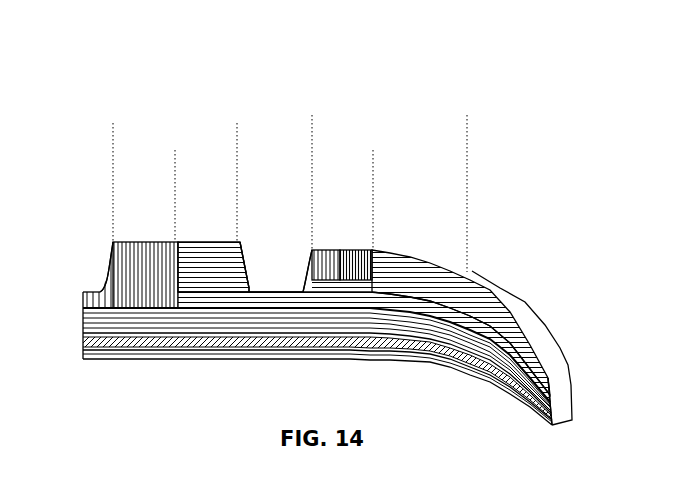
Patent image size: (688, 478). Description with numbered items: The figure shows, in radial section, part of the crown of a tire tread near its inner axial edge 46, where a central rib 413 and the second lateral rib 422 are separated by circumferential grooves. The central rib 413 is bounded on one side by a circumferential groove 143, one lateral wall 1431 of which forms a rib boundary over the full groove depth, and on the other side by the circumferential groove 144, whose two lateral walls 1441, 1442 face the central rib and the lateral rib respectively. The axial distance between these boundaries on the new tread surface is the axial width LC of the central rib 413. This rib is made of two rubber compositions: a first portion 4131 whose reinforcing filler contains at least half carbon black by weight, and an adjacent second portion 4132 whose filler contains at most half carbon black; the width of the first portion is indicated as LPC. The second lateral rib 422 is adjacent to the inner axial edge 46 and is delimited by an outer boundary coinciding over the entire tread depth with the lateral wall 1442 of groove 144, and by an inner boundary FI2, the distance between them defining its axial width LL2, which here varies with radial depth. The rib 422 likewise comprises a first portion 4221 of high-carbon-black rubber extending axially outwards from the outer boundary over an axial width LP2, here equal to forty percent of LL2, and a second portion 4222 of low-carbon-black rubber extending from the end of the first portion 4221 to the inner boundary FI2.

The central rib 413 is at (181, 90).
The first portion 4131 is at (158, 252).
The second portion 4132 is at (207, 256).
The circumferential groove 143 is at (87, 262).
The inclined side surface 1431 is at (107, 257).
The circumferential groove 144 is at (265, 228).
The first groove wall 1441 is at (245, 251).
The lateral wall 1442 is at (302, 258).
The second lateral rib 422 is at (391, 92).
The first portion 4221 is at (338, 254).
The second portion 4222 is at (417, 283).
The inner axial edge 46 is at (527, 300).
The inner boundary FI2 is at (534, 333).
The axial width LC is at (237, 142).
The first block portion width LPC is at (113, 158).
The axial width LL2 is at (312, 143).
The axial width LP2 is at (312, 178).